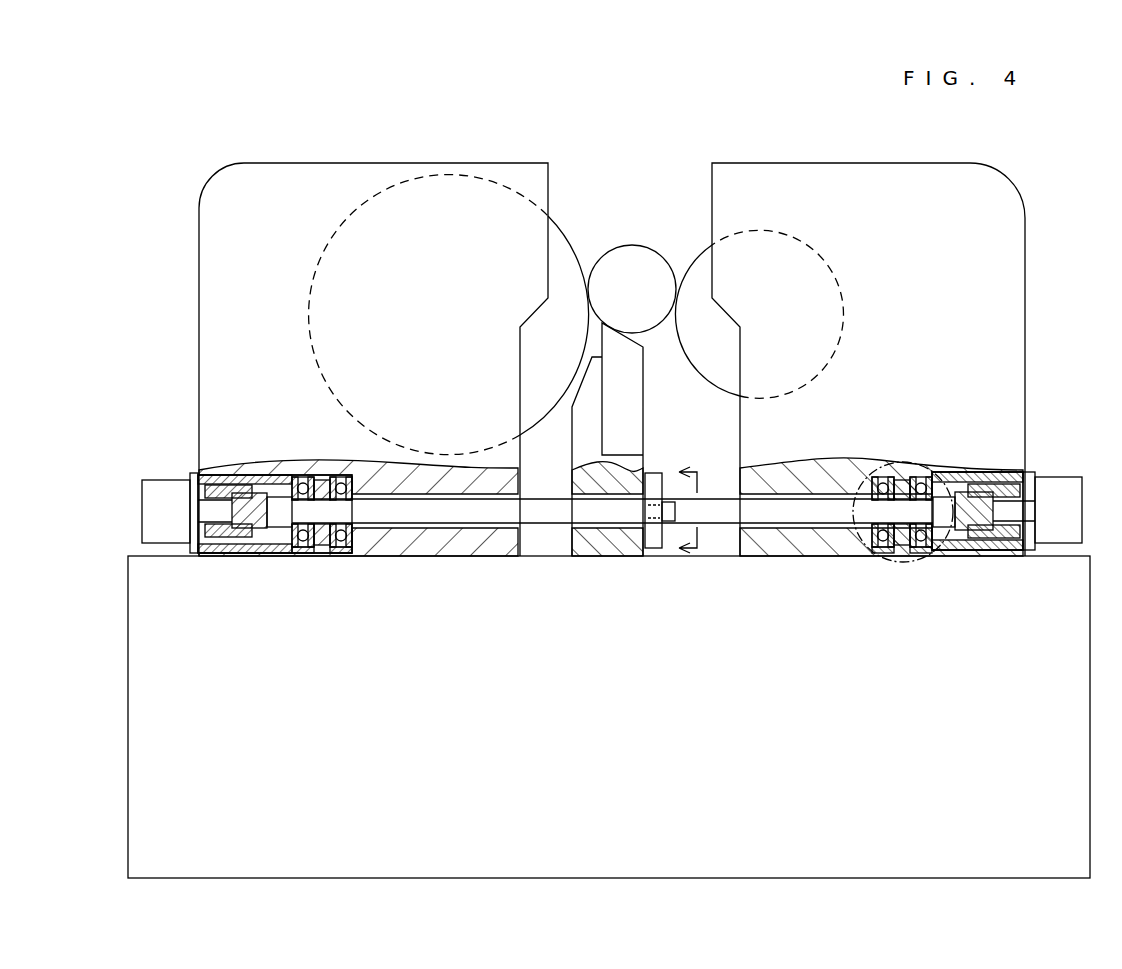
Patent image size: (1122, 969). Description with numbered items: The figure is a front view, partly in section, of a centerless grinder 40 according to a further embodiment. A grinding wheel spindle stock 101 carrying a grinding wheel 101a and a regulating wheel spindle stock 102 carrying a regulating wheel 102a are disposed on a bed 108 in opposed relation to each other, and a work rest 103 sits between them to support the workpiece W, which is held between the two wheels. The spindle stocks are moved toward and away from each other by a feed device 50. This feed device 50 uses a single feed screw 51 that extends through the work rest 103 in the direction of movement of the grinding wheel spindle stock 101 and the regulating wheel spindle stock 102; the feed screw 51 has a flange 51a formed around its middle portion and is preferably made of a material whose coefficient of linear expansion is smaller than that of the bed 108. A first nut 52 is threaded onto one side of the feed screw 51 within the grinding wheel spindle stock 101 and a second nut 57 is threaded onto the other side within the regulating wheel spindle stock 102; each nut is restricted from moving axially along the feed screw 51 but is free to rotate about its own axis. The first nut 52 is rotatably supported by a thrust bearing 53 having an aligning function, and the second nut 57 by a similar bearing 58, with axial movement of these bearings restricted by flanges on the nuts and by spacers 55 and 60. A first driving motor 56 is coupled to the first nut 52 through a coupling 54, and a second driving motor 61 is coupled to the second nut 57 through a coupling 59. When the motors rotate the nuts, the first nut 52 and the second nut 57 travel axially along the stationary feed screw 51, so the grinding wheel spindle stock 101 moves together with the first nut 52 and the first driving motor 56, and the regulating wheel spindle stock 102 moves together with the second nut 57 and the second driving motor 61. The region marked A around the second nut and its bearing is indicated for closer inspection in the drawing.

The centerless grinder 40 is at (442, 125).
The grinding wheel spindle stock 101 is at (205, 283).
The grinding wheel 101a is at (562, 238).
The regulating wheel spindle stock 102 is at (1020, 247).
The regulating wheel 102a is at (693, 358).
The workpiece W is at (640, 245).
The work rest 103 is at (600, 556).
The bed 108 is at (683, 711).
The feed device 50 is at (324, 459).
The feed screw 51 is at (778, 522).
The flange 51a is at (655, 548).
The first nut 52 is at (322, 548).
The bearing 53 is at (306, 562).
The coupling 54 is at (220, 537).
The spacer 55 is at (217, 478).
The first driving motor 56 is at (157, 484).
The second nut 57 is at (902, 547).
The bearing 58 is at (884, 562).
The coupling 59 is at (1002, 533).
The spacer 60 is at (975, 472).
The second driving motor 61 is at (1068, 485).
The detail region A is at (852, 462).